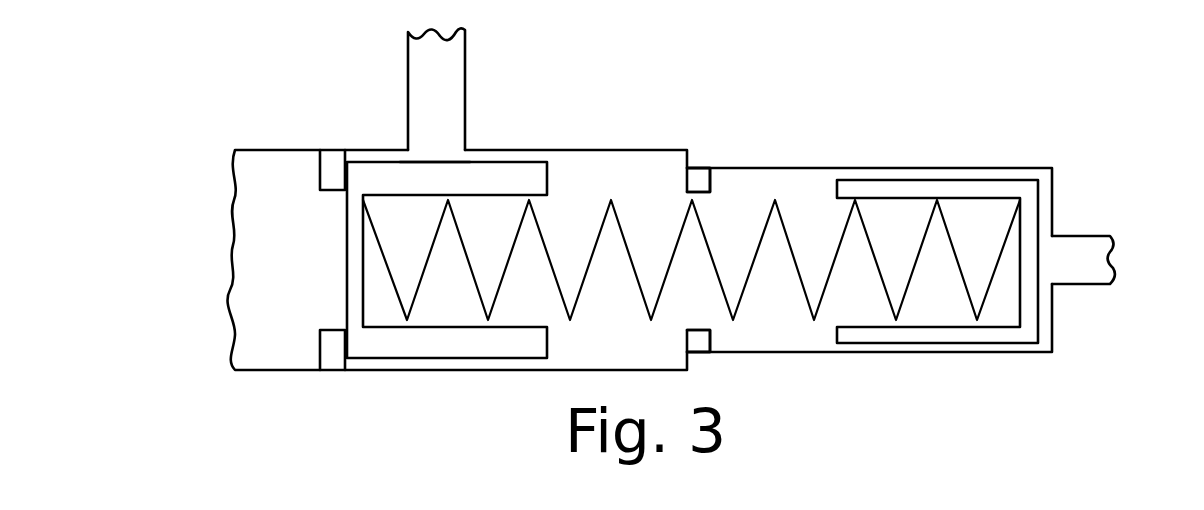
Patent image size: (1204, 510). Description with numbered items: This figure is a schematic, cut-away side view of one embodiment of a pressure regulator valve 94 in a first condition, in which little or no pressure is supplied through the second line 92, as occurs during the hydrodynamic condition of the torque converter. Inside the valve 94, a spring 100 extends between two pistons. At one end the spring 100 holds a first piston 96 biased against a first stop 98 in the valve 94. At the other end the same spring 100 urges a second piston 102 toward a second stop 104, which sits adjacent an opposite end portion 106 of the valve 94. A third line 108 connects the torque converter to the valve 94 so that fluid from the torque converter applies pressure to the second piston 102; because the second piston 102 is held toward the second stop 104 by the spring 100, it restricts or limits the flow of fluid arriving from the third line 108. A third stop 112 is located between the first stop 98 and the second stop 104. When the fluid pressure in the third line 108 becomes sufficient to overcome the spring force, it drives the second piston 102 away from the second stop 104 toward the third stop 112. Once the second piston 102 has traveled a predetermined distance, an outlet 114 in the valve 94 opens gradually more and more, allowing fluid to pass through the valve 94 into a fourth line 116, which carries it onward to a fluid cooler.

The second line 92 is at (1084, 242).
The pressure regulator valve 94 is at (838, 84).
The first piston 96 is at (917, 333).
The first stop 98 is at (1062, 324).
The spring 100 is at (750, 297).
The second piston 102 is at (432, 338).
The second stop 104 is at (335, 366).
The opposite end portion 106 is at (297, 134).
The third line 108 is at (260, 312).
The third stop 112 is at (703, 173).
The outlet 114 is at (442, 147).
The fourth line 116 is at (446, 68).